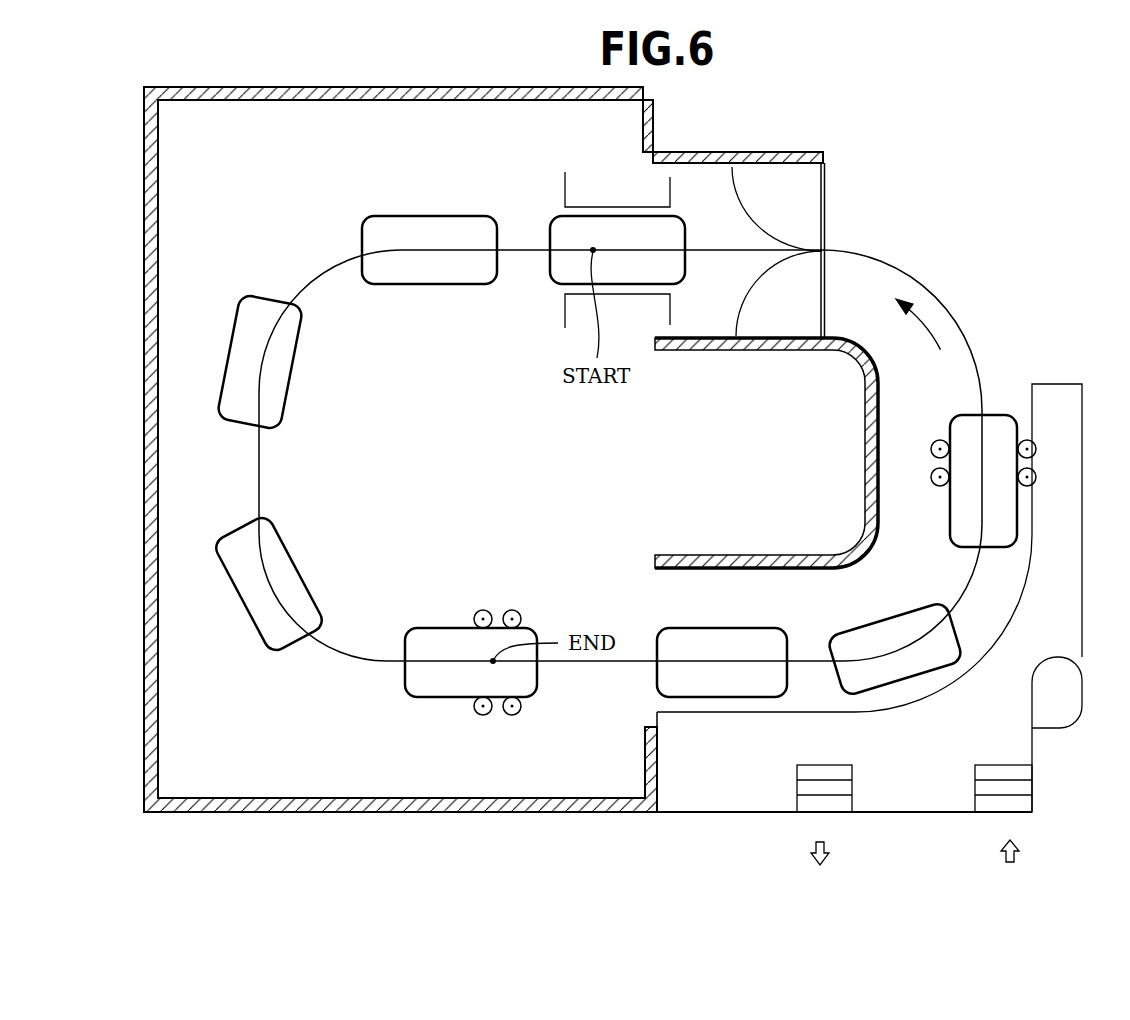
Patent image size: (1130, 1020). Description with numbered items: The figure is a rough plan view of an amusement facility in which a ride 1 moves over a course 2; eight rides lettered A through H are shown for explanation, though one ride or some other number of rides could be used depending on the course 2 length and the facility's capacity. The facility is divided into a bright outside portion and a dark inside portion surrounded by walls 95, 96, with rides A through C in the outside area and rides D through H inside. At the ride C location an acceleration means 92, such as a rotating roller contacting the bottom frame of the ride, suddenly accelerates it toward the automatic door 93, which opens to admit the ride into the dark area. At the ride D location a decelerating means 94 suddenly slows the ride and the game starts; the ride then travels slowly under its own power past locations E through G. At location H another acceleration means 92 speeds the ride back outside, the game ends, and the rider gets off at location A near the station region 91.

The ride 1 is at (432, 215).
The course 2 is at (962, 308).
The loading and unloading station 91 is at (907, 802).
The acceleration means 92 is at (520, 612).
The automatic door 93 is at (826, 200).
The decelerating means 94 is at (563, 183).
The wall 95 is at (748, 555).
The wall 96 is at (348, 797).